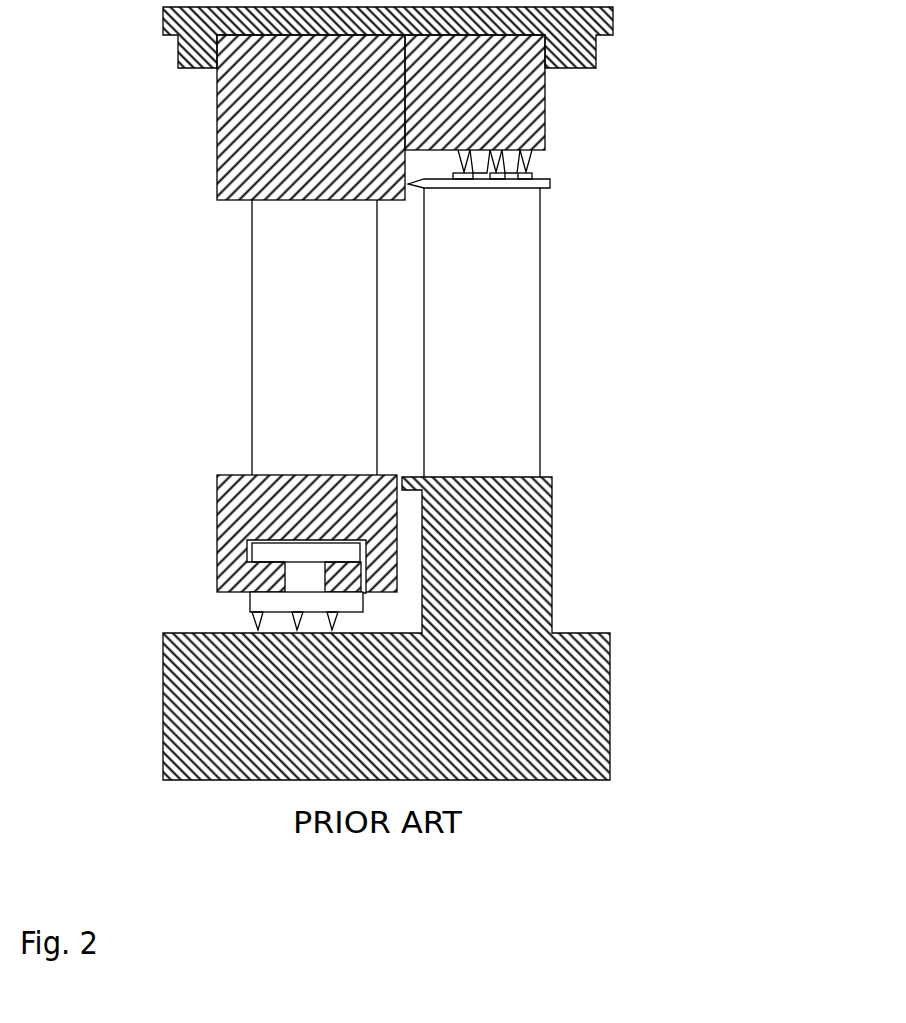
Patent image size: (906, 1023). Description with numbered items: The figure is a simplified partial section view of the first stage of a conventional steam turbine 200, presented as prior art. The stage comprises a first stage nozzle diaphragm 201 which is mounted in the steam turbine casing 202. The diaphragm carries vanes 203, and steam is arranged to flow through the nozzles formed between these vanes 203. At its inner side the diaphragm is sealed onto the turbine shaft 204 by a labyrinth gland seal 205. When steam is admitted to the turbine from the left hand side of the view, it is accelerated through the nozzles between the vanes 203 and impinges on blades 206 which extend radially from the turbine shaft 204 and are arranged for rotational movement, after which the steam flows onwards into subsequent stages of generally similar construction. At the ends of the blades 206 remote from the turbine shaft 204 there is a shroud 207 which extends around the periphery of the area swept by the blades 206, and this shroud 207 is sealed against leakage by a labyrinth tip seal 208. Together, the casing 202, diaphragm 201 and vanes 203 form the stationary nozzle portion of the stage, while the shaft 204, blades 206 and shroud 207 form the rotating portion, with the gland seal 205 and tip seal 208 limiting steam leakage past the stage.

The conventional steam turbine 200 is at (830, 204).
The first stage nozzle diaphragm 201 is at (217, 166).
The steam turbine casing 202 is at (178, 50).
The vanes 203 is at (293, 295).
The turbine shaft 204 is at (565, 633).
The labyrinth gland seal 205 is at (287, 618).
The blades 206 is at (482, 352).
The shroud 207 is at (490, 188).
The labyrinth tip seal 208 is at (528, 162).